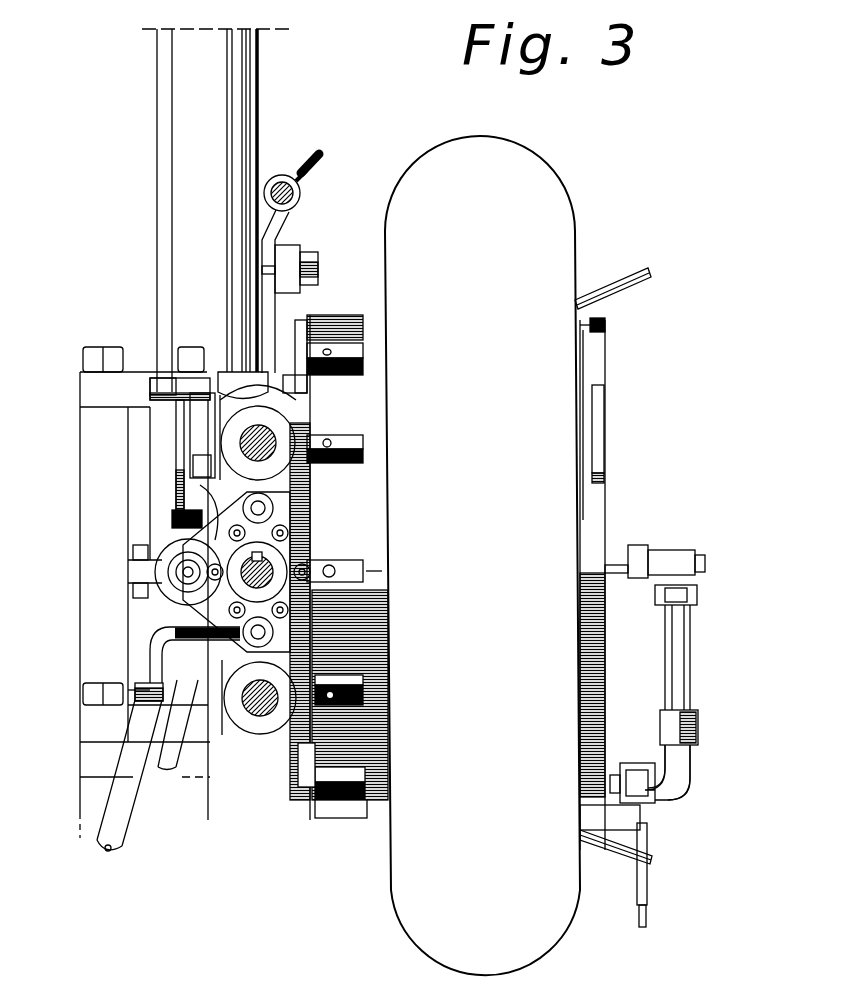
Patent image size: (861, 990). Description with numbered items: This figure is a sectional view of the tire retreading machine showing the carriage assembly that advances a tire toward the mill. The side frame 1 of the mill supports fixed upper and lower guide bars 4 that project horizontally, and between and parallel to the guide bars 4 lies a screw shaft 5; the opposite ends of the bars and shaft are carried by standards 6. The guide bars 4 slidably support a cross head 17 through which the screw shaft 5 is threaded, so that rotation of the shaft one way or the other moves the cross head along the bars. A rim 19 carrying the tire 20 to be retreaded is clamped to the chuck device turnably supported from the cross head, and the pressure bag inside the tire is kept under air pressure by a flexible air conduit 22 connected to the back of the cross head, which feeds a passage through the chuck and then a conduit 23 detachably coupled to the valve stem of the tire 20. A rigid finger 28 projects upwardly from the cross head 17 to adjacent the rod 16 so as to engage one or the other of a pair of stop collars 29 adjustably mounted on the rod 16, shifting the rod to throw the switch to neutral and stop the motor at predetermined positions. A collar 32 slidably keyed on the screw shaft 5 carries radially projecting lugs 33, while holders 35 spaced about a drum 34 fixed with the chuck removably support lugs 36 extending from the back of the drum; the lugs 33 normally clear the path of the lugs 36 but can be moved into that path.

The side frame 1 is at (92, 763).
The guide bar 4 is at (266, 437).
The screw shaft 5 is at (310, 546).
The standard 6 is at (158, 465).
The rod 16 is at (281, 175).
The cross head 17 is at (300, 506).
The rim 19 is at (588, 375).
The tire 20 is at (548, 248).
The flexible air conduit 22 is at (125, 822).
The conduit 23 is at (693, 664).
The rigid finger 28 is at (268, 250).
The stop collar 29 is at (300, 198).
The collar 32 is at (233, 583).
The lug 33 is at (183, 572).
The drum 34 is at (368, 540).
The holder 35 is at (363, 350).
The lug 36 is at (304, 379).